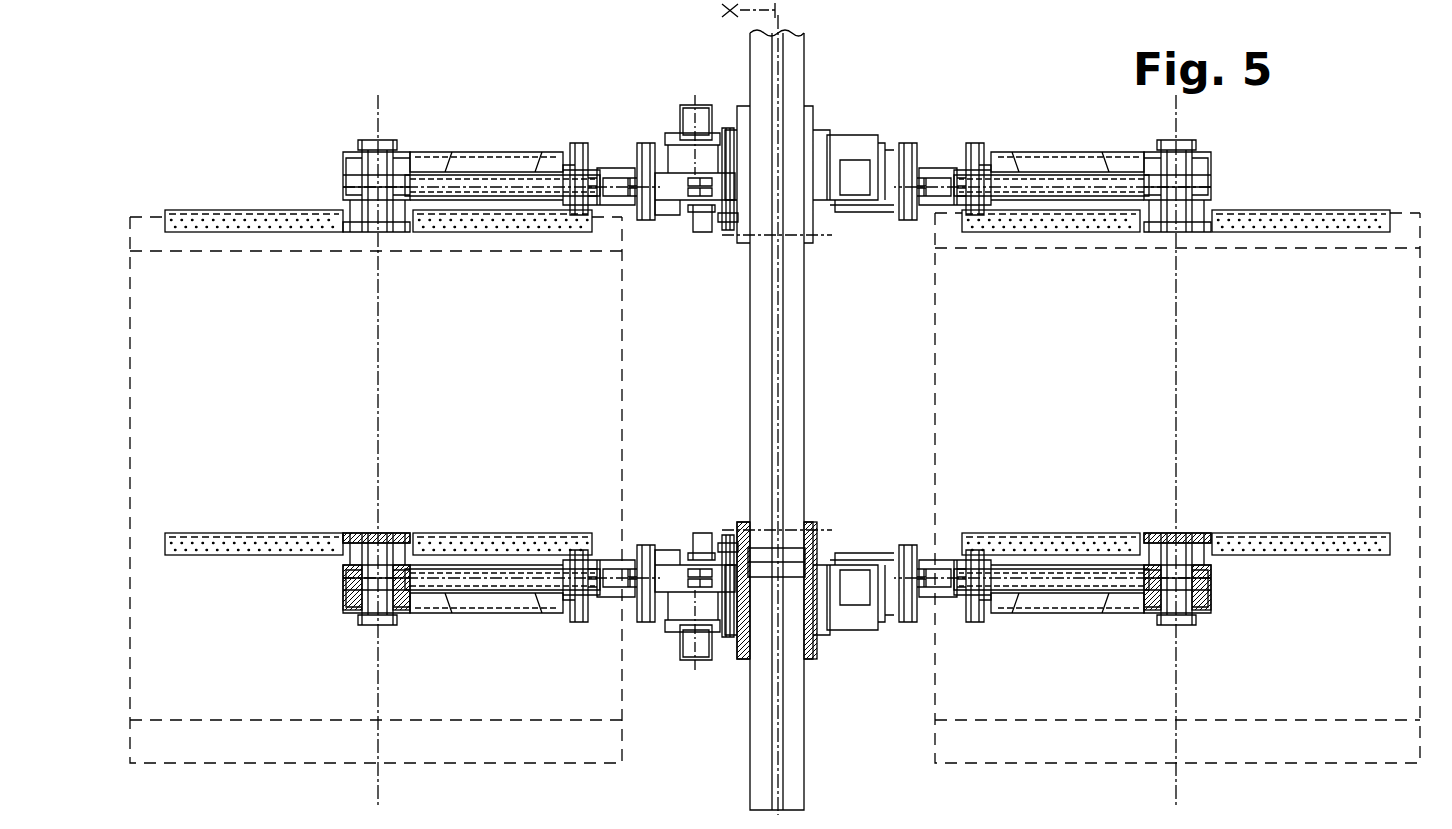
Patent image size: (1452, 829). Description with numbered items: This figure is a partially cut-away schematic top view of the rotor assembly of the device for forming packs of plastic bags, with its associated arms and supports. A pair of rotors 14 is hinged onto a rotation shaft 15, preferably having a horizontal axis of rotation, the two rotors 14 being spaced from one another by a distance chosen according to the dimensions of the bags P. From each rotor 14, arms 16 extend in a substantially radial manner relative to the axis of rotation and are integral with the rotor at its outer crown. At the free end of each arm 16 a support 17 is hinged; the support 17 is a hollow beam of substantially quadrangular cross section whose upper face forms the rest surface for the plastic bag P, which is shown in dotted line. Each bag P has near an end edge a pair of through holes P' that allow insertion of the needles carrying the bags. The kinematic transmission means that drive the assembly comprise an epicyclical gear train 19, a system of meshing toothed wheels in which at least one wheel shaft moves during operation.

The rotor 14 is at (859, 102).
The rotation shaft 15 is at (795, 73).
The arm 16 is at (493, 158).
The support 17 is at (458, 233).
The epicyclical gear train 19 is at (725, 248).
The plastic bag P is at (775, 488).
The through holes P' is at (402, 270).